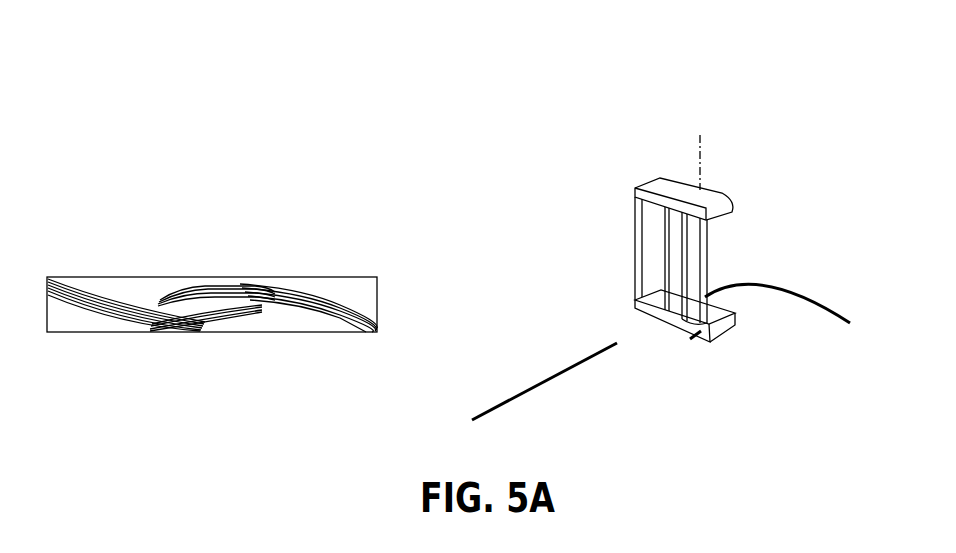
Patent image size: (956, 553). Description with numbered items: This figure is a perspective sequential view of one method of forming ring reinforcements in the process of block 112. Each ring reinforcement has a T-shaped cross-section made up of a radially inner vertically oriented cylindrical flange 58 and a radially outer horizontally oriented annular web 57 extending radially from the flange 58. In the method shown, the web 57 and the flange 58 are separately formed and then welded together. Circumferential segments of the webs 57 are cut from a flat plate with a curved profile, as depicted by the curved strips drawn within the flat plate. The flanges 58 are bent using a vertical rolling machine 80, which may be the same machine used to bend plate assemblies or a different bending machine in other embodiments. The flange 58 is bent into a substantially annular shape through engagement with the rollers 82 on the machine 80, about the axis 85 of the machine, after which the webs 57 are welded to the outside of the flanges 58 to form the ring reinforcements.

The block 112 is at (321, 71).
The annular web 57 is at (276, 292).
The cylindrical flange 58 is at (568, 370).
The vertical rolling machine 80 is at (628, 186).
The rollers 82 is at (673, 267).
The axis 85 is at (700, 142).